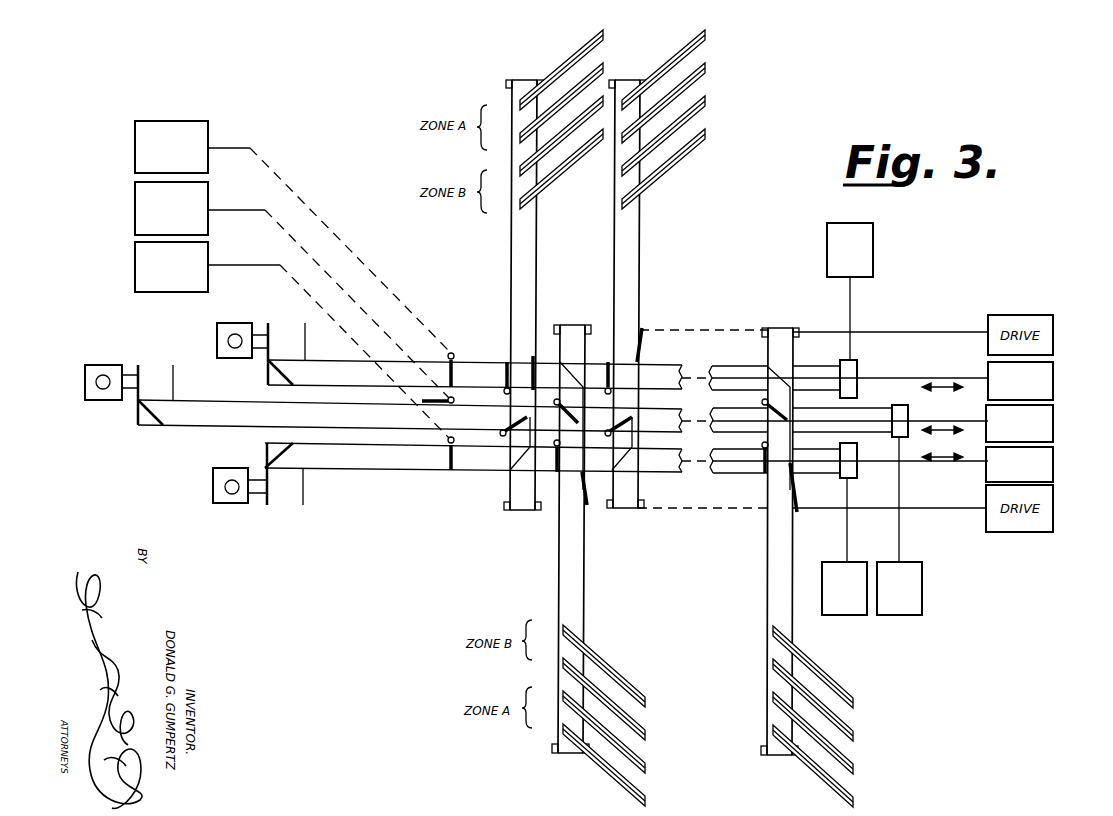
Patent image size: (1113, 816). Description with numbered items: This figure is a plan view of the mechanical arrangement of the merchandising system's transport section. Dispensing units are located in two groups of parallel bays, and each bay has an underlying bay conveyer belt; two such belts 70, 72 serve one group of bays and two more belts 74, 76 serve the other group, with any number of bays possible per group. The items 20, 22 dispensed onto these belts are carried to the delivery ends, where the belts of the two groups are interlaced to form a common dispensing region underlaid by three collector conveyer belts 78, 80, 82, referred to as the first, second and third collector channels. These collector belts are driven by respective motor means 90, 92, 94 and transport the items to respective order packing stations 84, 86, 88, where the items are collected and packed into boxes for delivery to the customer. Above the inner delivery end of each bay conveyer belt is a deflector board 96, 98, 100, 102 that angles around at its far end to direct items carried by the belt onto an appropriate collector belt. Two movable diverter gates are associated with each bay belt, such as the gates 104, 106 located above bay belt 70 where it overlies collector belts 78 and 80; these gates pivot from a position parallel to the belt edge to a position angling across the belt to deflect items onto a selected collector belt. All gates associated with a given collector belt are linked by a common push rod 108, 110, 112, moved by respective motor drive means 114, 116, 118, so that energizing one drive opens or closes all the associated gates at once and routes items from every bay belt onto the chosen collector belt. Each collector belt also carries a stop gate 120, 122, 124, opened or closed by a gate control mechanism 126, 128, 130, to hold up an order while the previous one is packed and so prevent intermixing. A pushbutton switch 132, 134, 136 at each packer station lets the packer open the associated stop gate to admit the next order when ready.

The zone A discharge chute 20 is at (700, 48).
The zone B discharge chute 22 is at (700, 118).
The bay conveyer belt 70 is at (542, 78).
The bay conveyer belt 72 is at (622, 90).
The bay conveyer belt 74 is at (566, 544).
The bay conveyer belt 76 is at (767, 524).
The collector conveyer belt 78 is at (758, 356).
The collector conveyer belt 80 is at (717, 418).
The collector conveyer belt 82 is at (722, 468).
The order packing station 84 is at (300, 332).
The order packing station 86 is at (162, 374).
The order packing station 88 is at (291, 508).
The motor means 90 is at (827, 250).
The motor means 92 is at (922, 580).
The motor means 94 is at (853, 615).
The deflector board 96 is at (534, 355).
The deflector board 98 is at (588, 498).
The deflector board 100 is at (640, 352).
The deflector board 102 is at (785, 470).
The diverter gate 104 is at (504, 390).
The diverter gate 106 is at (501, 433).
The push rod 108 is at (956, 380).
The push rod 110 is at (966, 428).
The push rod 112 is at (966, 462).
The motor drive means 114 is at (1053, 370).
The motor drive means 116 is at (1053, 417).
The motor drive means 118 is at (1053, 458).
The stop gate 120 is at (453, 372).
The stop gate 122 is at (420, 400).
The stop gate 124 is at (448, 468).
The gate control mechanism 126 is at (135, 146).
The gate control mechanism 128 is at (135, 205).
The gate control mechanism 130 is at (135, 263).
The pushbutton switch 132 is at (217, 336).
The pushbutton switch 134 is at (116, 365).
The pushbutton switch 136 is at (213, 484).